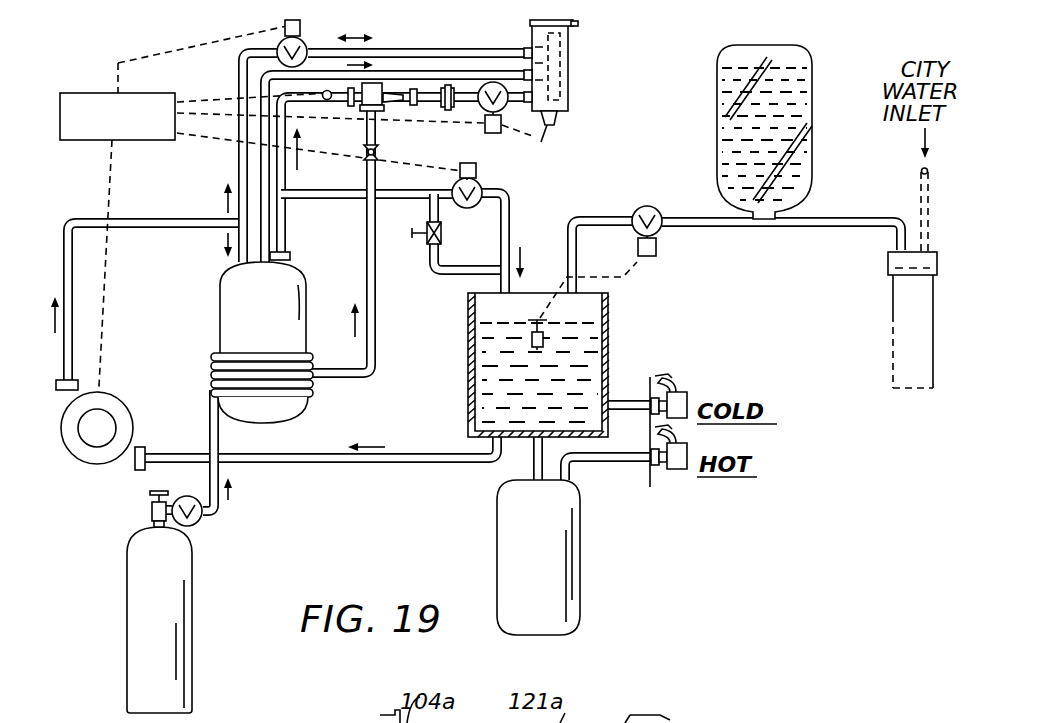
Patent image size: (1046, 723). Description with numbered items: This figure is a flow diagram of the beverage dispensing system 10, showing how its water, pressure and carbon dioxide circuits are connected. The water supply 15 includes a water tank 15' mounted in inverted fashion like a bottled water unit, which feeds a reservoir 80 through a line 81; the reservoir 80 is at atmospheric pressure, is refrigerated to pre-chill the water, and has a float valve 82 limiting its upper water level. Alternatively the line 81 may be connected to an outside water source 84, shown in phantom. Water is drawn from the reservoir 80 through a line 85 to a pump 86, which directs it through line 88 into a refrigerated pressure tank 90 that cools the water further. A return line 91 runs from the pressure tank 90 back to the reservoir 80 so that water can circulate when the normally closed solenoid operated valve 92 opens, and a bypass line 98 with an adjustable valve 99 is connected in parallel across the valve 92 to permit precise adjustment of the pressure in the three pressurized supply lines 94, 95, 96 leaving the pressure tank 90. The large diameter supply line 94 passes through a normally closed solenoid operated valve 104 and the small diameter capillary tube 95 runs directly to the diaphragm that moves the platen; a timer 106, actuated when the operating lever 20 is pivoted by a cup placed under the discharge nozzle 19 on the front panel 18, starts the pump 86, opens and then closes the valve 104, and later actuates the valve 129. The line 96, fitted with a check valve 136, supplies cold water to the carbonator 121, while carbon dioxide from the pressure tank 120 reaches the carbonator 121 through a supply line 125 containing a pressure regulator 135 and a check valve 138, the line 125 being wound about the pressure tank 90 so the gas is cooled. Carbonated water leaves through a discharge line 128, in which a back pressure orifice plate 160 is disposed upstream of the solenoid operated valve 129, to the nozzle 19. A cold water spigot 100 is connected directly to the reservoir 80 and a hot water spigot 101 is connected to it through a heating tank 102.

The beverage dispensing system 10 is at (404, 493).
The water supply 15 is at (494, 372).
The water tank 15' is at (736, 132).
The front panel 18 is at (582, 60).
The discharge nozzle 19 is at (560, 122).
The operating lever 20 is at (548, 140).
The reservoir 80 is at (608, 325).
The line 81 is at (577, 250).
The float valve 82 is at (538, 350).
The outside water source 84 is at (893, 320).
The line 85 is at (302, 466).
The pump 86 is at (100, 462).
The line 88 is at (72, 297).
The pressure tank 90 is at (222, 320).
The return line 91 is at (318, 198).
The solenoid operated valve 92 is at (483, 190).
The pressurized fluid supply line 94 is at (240, 70).
The capillary tube 95 is at (263, 133).
The pressurized water supply line 96 is at (276, 97).
The bypass line 98 is at (440, 277).
The adjustable valve 99 is at (441, 235).
The cold water spigot 100 is at (688, 387).
The hot water spigot 101 is at (682, 469).
The heating tank 102 is at (568, 555).
The solenoid operated valve 104 is at (280, 37).
The timer 106 is at (87, 93).
The pressure tank 120 is at (130, 578).
The carbonator 121 is at (378, 80).
The carbon dioxide supply line 125 is at (372, 322).
The discharge line 128 is at (472, 113).
The solenoid operated valve 129 is at (512, 136).
The pressure regulator 135 is at (202, 518).
The check valve 136 is at (327, 101).
The check valve 138 is at (362, 158).
The back pressure orifice plate 160 is at (450, 108).